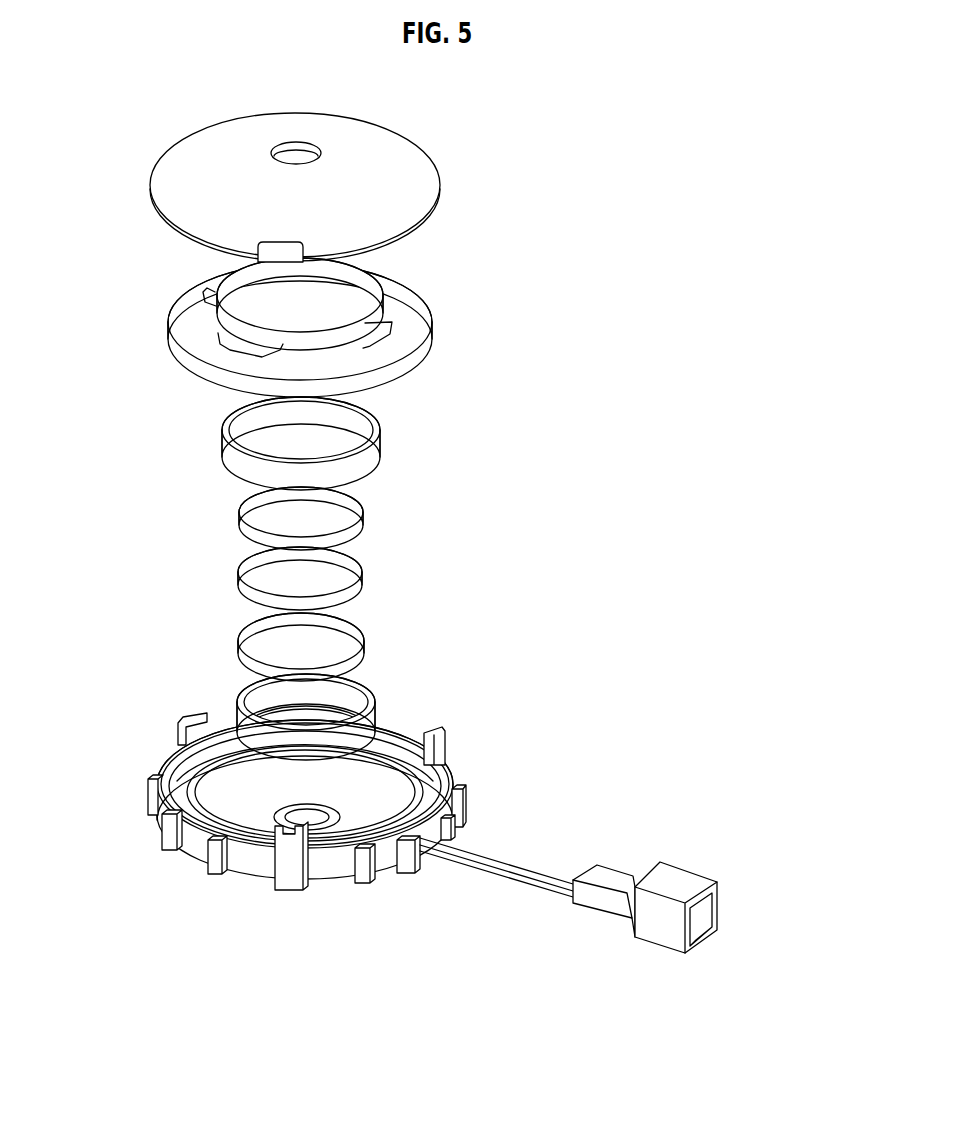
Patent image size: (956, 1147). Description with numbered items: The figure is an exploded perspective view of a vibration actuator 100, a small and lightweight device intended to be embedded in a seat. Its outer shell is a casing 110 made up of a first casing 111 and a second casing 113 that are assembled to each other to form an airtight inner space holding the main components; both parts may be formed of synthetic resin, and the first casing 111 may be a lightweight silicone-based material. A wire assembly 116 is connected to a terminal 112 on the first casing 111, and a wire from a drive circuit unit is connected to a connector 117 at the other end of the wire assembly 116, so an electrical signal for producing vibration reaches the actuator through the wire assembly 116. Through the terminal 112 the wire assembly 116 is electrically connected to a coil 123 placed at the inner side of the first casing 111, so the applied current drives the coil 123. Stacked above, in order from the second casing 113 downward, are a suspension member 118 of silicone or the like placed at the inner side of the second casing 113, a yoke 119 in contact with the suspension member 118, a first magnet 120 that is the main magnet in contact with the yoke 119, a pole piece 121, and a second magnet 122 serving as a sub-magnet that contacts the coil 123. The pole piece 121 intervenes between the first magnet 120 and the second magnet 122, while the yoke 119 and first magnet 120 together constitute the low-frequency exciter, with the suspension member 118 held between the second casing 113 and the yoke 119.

The vibration actuator 100 is at (537, 617).
The casing 110 is at (370, 542).
The first casing 111 is at (325, 872).
The terminal 112 is at (420, 850).
The second casing 113 is at (427, 180).
The wire assembly 116 is at (532, 856).
The connector 117 is at (675, 877).
The suspension member 118 is at (363, 290).
The yoke 119 is at (373, 455).
The first magnet 120 is at (358, 503).
The pole piece 121 is at (358, 565).
The second magnet 122 is at (355, 640).
The coil 123 is at (363, 687).